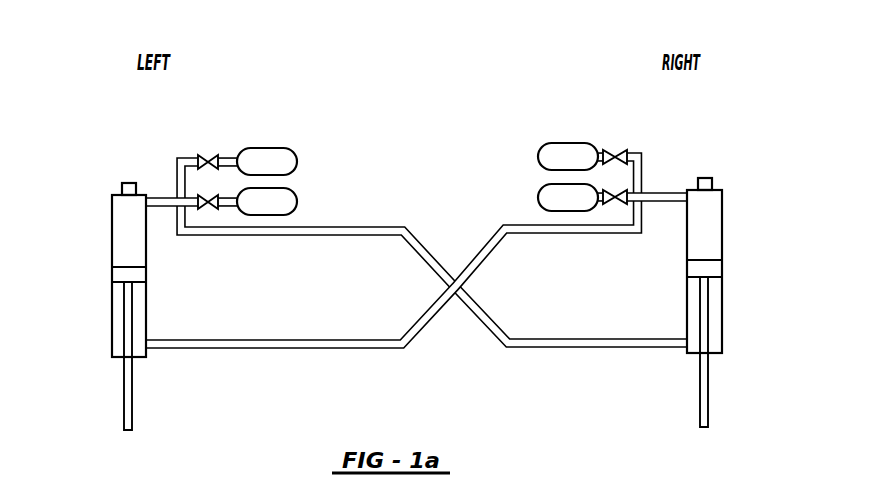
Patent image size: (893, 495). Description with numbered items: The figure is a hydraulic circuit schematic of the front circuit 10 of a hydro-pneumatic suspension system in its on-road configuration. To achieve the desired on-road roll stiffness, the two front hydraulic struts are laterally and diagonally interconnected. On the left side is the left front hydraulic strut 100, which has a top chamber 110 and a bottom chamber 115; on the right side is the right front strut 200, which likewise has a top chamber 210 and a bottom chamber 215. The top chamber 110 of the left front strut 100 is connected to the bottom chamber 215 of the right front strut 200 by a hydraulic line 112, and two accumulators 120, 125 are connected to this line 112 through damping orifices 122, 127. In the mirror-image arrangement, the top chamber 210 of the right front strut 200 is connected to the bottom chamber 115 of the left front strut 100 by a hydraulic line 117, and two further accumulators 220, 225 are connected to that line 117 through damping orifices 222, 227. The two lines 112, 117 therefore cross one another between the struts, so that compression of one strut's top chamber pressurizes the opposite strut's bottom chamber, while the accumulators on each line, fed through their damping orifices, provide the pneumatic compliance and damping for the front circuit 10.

The front circuit 10 is at (406, 252).
The left front hydraulic strut 100 is at (205, 261).
The top chamber 110 is at (112, 222).
The bottom chamber 115 is at (112, 340).
The accumulator 120 is at (297, 162).
The accumulator 125 is at (297, 201).
The damping orifice 122 is at (208, 155).
The damping orifice 127 is at (217, 207).
The hydraulic line 112 is at (338, 236).
The hydraulic line 117 is at (277, 349).
The right front strut 200 is at (620, 251).
The top chamber 210 is at (722, 228).
The bottom chamber 215 is at (722, 335).
The accumulator 220 is at (538, 155).
The accumulator 225 is at (538, 201).
The damping orifice 222 is at (614, 150).
The damping orifice 227 is at (622, 204).